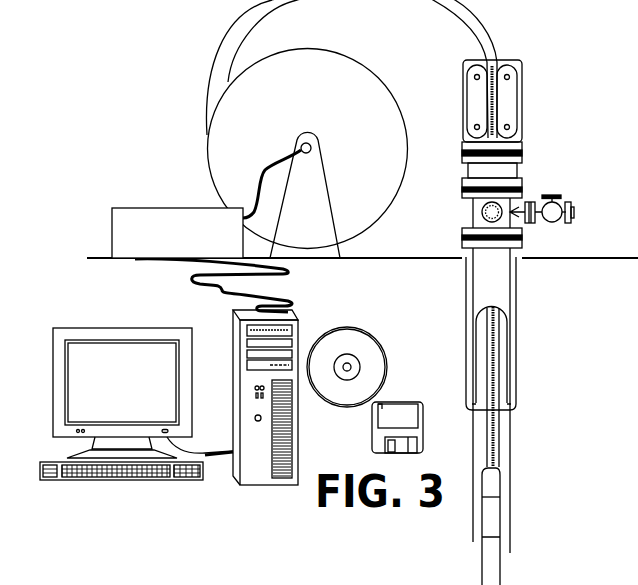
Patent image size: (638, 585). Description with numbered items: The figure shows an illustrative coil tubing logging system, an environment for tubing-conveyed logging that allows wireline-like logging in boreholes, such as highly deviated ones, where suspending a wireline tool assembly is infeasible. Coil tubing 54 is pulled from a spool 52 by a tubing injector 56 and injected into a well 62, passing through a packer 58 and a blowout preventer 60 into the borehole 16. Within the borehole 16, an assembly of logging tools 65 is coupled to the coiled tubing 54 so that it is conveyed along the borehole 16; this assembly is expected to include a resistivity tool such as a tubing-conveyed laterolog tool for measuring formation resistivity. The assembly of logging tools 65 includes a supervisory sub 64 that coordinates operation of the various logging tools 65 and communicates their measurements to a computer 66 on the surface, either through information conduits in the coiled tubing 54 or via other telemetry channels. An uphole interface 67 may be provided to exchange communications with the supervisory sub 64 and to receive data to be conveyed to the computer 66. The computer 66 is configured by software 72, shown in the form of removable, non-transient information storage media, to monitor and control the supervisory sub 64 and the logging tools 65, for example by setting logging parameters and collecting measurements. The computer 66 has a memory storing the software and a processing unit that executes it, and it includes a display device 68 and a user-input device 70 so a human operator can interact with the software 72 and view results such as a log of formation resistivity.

The borehole 16 is at (512, 537).
The spool 52 is at (282, 114).
The coil tubing 54 is at (250, 30).
The tubing injector 56 is at (518, 88).
The packer 58 is at (518, 165).
The blowout preventer 60 is at (470, 213).
The well 62 is at (510, 303).
The supervisory sub 64 is at (502, 485).
The assembly of logging tools 65 is at (502, 522).
The computer 66 is at (235, 421).
The uphole interface 67 is at (152, 206).
The display device 68 is at (64, 437).
The user-input device 70 is at (60, 479).
The software 72 is at (372, 412).